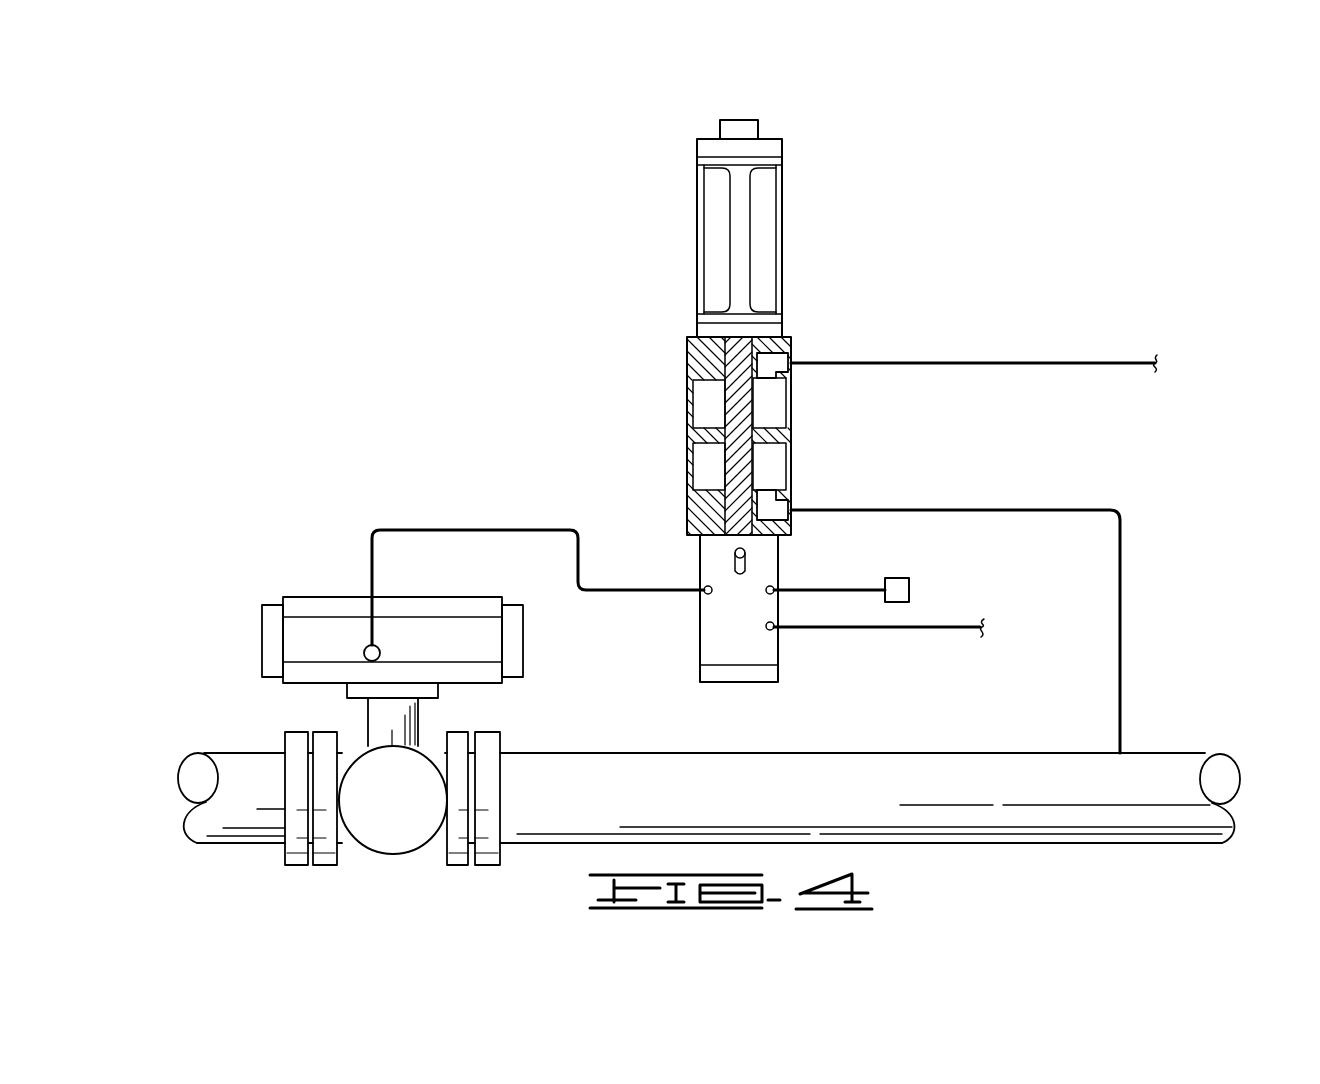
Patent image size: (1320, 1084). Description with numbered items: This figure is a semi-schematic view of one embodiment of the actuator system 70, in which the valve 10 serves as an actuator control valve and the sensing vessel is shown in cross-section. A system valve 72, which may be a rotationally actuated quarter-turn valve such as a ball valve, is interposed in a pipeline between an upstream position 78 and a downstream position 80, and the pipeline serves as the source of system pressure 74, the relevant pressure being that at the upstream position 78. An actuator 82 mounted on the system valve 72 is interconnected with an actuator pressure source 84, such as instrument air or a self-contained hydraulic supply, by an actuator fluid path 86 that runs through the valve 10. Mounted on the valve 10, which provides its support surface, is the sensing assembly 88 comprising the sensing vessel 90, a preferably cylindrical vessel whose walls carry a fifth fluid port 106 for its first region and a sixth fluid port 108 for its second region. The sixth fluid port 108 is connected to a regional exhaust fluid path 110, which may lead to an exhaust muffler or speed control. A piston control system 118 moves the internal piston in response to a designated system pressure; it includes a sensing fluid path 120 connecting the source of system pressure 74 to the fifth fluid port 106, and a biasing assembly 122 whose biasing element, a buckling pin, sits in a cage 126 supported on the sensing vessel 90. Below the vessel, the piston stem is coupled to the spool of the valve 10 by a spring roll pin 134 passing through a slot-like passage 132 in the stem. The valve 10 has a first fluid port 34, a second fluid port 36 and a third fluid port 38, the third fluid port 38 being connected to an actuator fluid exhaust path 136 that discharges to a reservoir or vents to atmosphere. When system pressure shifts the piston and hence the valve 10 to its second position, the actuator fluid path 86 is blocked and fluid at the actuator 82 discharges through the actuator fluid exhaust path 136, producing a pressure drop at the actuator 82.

The actuator system 70 is at (820, 97).
The biasing assembly 122 is at (805, 193).
The cage 126 is at (785, 270).
The sensing assembly 88 is at (657, 335).
The sensing vessel 90 is at (688, 362).
The sixth fluid port 108 is at (785, 385).
The fifth fluid port 106 is at (785, 478).
The regional exhaust fluid path 110 is at (1048, 362).
The piston control system 118 is at (1137, 482).
The sensing fluid path 120 is at (1122, 625).
The valve 10 is at (690, 645).
The passage 132 is at (735, 553).
The spring roll pin 134 is at (735, 568).
The second fluid port 36 is at (705, 592).
The first fluid port 34 is at (773, 588).
The third fluid port 38 is at (773, 630).
The actuator fluid path 86 is at (465, 530).
The actuator pressure source 84 is at (910, 585).
The actuator fluid exhaust path 136 is at (905, 628).
The actuator 82 is at (323, 605).
The source of system pressure 74 is at (590, 752).
The downstream position 80 is at (248, 770).
The upstream position 78 is at (865, 775).
The system valve 72 is at (385, 825).